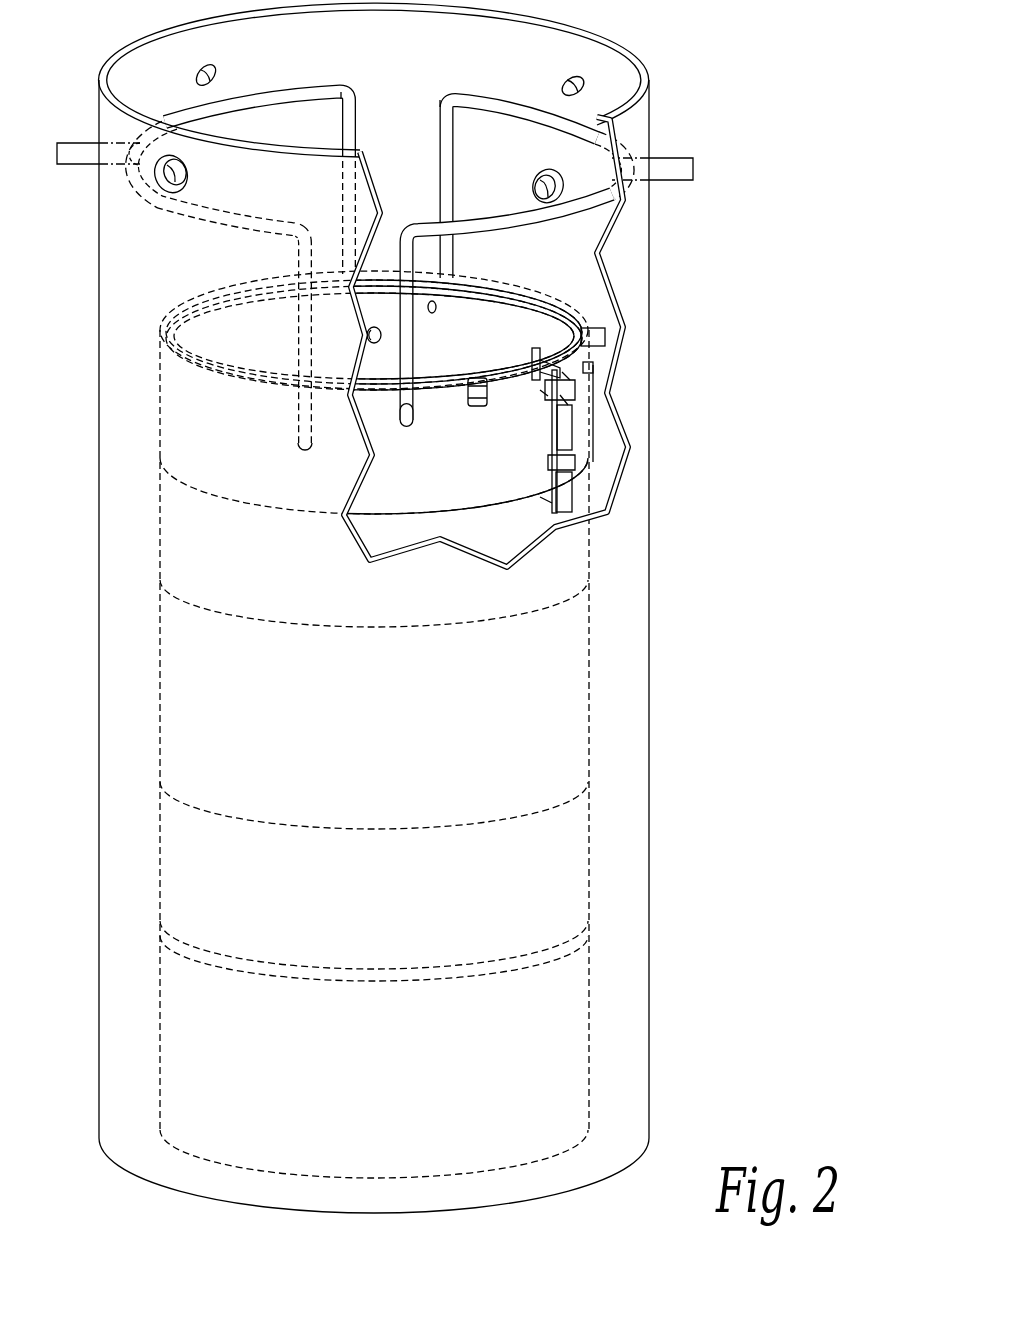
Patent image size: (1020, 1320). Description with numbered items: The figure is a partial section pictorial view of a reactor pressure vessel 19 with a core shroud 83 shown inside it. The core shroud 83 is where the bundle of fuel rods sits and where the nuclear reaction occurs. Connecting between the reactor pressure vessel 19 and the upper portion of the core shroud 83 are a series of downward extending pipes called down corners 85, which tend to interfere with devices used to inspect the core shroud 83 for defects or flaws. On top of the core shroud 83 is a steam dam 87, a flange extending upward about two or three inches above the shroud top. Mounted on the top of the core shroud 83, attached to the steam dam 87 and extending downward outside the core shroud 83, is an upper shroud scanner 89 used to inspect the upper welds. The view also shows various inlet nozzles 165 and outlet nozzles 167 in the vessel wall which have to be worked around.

The reactor pressure vessel 19 is at (650, 675).
The core shroud 83 is at (454, 481).
The down corners 85 is at (400, 255).
The steam dam 87 is at (181, 303).
The upper shroud scanner 89 is at (580, 431).
The inlet nozzles 165 is at (235, 60).
The outlet nozzles 167 is at (566, 84).